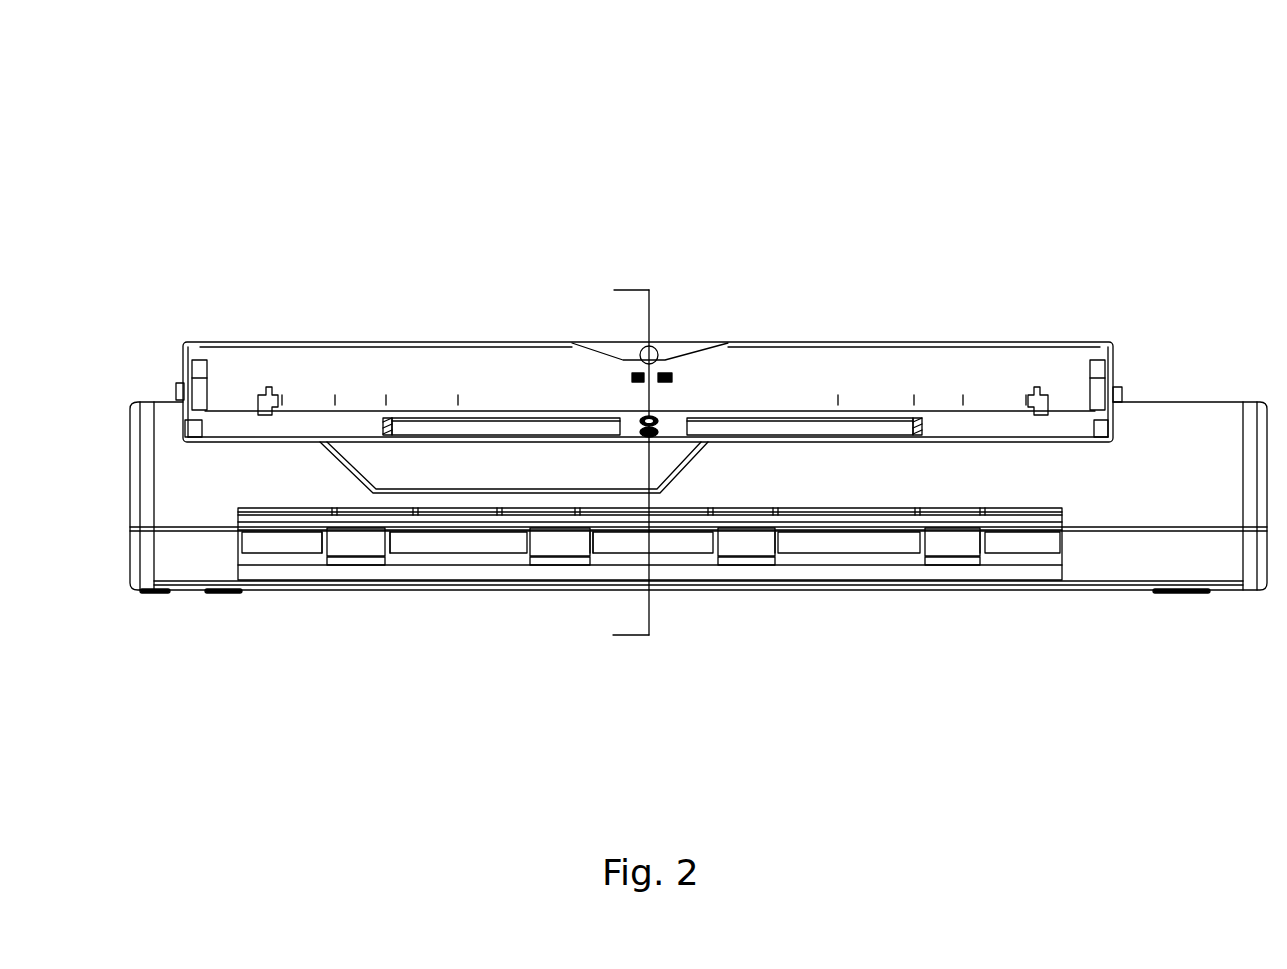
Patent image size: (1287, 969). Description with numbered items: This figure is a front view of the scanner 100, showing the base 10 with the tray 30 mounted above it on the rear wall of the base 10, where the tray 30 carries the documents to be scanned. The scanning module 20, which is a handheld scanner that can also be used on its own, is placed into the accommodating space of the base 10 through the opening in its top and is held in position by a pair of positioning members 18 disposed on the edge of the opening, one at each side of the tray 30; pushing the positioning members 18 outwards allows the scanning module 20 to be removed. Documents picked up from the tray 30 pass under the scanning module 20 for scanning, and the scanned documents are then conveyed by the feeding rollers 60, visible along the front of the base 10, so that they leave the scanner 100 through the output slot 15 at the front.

The scanner 100 is at (135, 79).
The base 10 is at (1158, 467).
The output slot 15 is at (1018, 573).
The positioning members 18 is at (178, 387).
The scanning module 20 is at (428, 477).
The tray 30 is at (947, 365).
The feeding rollers 60 is at (740, 540).